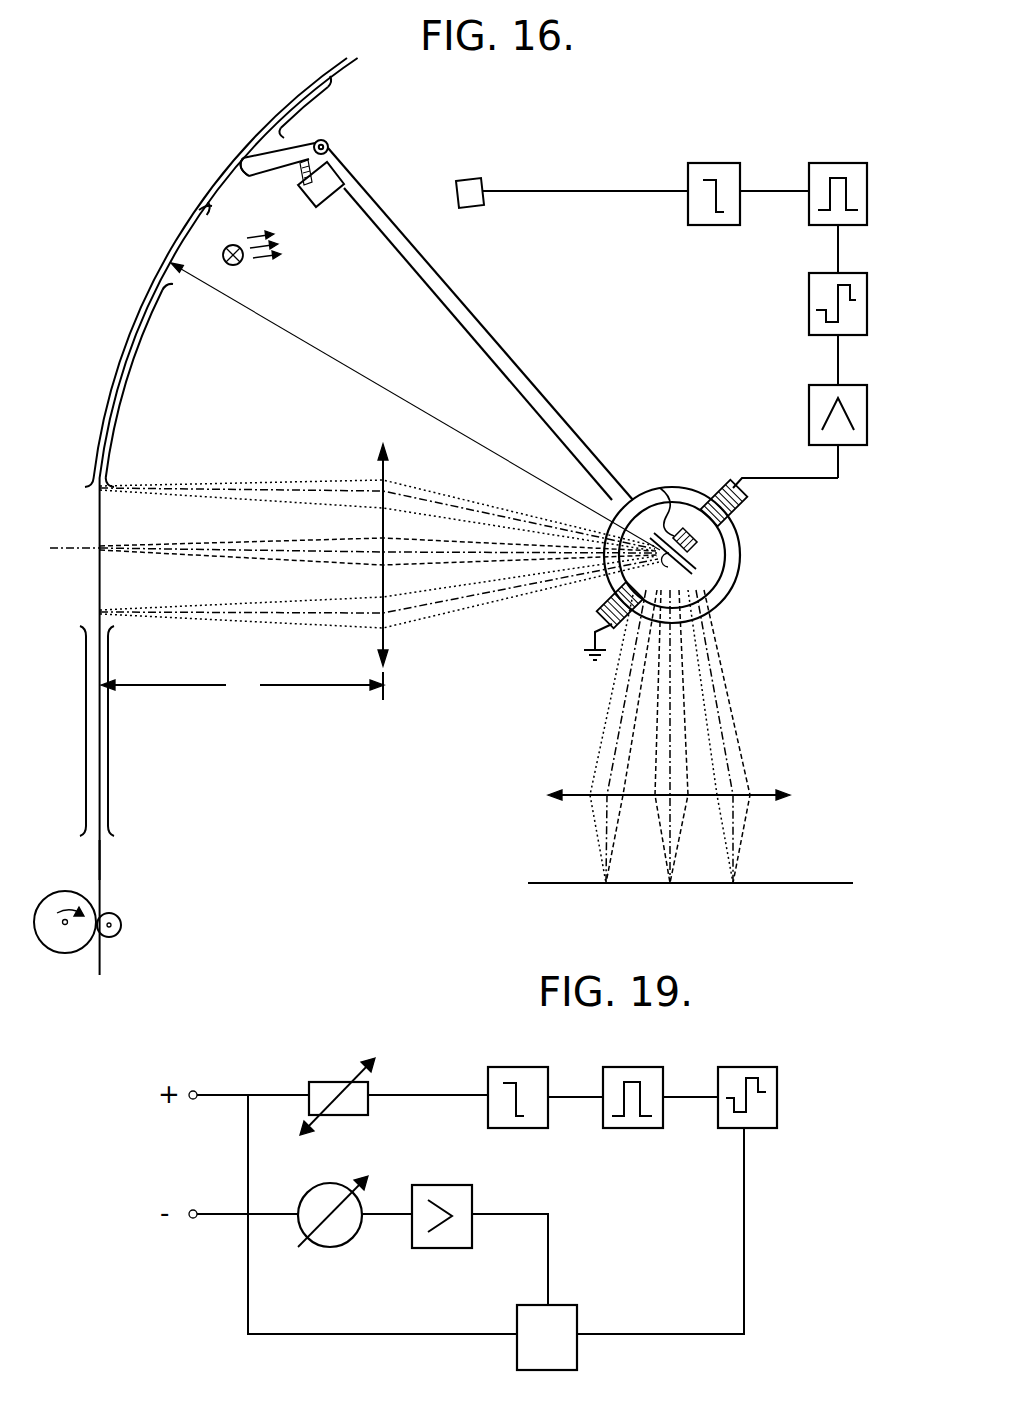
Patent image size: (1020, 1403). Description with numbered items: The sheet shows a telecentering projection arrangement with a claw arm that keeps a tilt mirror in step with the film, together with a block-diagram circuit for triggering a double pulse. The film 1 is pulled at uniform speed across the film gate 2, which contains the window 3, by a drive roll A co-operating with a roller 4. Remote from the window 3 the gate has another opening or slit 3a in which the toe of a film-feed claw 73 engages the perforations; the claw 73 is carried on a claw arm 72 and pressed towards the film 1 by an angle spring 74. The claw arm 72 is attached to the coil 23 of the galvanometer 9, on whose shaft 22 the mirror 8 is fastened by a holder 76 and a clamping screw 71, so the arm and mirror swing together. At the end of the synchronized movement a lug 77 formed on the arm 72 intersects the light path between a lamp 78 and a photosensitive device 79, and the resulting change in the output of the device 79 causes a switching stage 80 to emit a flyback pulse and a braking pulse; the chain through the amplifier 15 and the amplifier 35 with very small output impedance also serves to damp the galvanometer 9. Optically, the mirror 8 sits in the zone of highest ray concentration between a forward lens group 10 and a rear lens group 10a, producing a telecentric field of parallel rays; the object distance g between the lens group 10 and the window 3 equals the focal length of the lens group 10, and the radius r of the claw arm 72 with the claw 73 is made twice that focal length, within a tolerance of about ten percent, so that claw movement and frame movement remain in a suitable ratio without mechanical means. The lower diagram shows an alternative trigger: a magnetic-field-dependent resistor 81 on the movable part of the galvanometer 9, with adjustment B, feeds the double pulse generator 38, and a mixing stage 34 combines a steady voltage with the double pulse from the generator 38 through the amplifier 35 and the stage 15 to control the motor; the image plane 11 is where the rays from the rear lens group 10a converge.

In FIG. 16, the film strip 1 is at (100, 860).
In FIG. 16, the film gate 2 is at (104, 428).
In FIG. 16, the window 3 is at (98, 530).
In FIG. 16, the slit 3a is at (198, 216).
In FIG. 16, the roller 4 is at (120, 924).
In FIG. 16, the drive roll A is at (50, 895).
In FIG. 16, the mirror 8 is at (713, 592).
In FIG. 16, the galvanometer 9 is at (683, 490).
In FIG. 19, the galvanometer 9 is at (310, 1194).
In FIG. 16, the forward lens group 10 is at (386, 626).
In FIG. 16, the rear lens group 10a is at (583, 795).
In FIG. 16, the image plane 11 is at (798, 883).
In FIG. 16, the amplifier 15 is at (834, 166).
In FIG. 19, the amplifier 15 is at (650, 1072).
In FIG. 16, the shaft 22 is at (695, 560).
In FIG. 16, the coil 23 is at (716, 486).
In FIG. 19, the mixing stage 34 is at (566, 1306).
In FIG. 16, the amplifier 35 is at (867, 402).
In FIG. 19, the amplifier 35 is at (456, 1190).
In FIG. 16, the double pulse generator 38 is at (862, 292).
In FIG. 19, the double pulse generator 38 is at (768, 1072).
In FIG. 16, the clamping screw 71 is at (660, 488).
In FIG. 16, the claw arm 72 is at (458, 298).
In FIG. 16, the film-feed claw 73 is at (240, 156).
In FIG. 16, the angle spring 74 is at (281, 170).
In FIG. 16, the holder 76 is at (693, 545).
In FIG. 16, the lug 77 is at (324, 208).
In FIG. 16, the lamp 78 is at (240, 266).
In FIG. 16, the photosensitive device 79 is at (468, 180).
In FIG. 16, the switching stage 80 is at (700, 166).
In FIG. 19, the switching stage 80 is at (530, 1072).
In FIG. 19, the magnetic-field-dependent resistor 81 is at (332, 1082).
In FIG. 19, the adjustment B is at (333, 1137).
In FIG. 16, the object distance g is at (242, 686).
In FIG. 16, the radius r is at (415, 406).